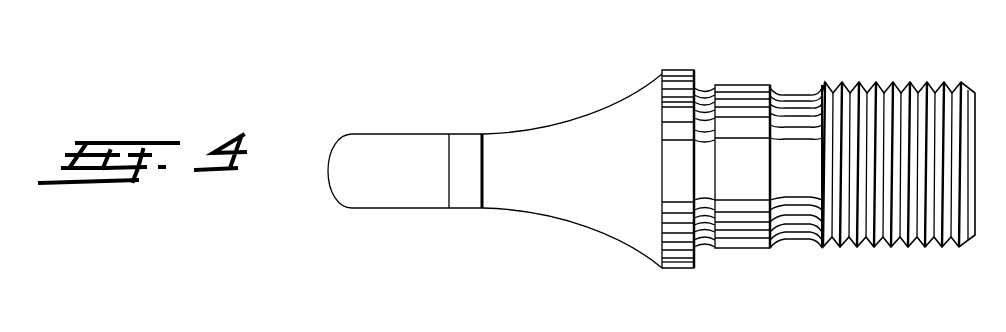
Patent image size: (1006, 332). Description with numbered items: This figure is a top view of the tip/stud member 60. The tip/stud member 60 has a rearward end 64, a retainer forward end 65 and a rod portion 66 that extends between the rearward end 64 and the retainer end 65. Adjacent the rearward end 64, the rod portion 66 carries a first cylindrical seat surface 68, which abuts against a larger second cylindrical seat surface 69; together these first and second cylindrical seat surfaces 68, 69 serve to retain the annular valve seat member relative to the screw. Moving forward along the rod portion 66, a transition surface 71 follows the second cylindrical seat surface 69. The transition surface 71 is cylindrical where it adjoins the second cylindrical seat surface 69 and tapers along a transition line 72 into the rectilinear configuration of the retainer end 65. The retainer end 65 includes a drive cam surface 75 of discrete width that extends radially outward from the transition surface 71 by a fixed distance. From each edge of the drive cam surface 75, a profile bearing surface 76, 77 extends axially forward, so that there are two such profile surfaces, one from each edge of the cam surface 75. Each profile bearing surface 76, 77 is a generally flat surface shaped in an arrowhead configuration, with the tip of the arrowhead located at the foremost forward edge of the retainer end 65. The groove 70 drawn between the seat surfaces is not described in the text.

The tip/stud member 60 is at (875, 250).
The rearward end 64 is at (932, 82).
The retainer forward end 65 is at (328, 198).
The rod portion 66 is at (661, 68).
The first cylindrical seat surface 68 is at (760, 83).
The second cylindrical seat surface 69 is at (673, 268).
The groove 70 is at (699, 80).
The transition surface 71 is at (558, 125).
The transition line 72 is at (561, 213).
The drive cam surface 75 is at (485, 147).
The profile bearing surface 76 is at (398, 210).
The profile bearing surface 77 is at (405, 113).